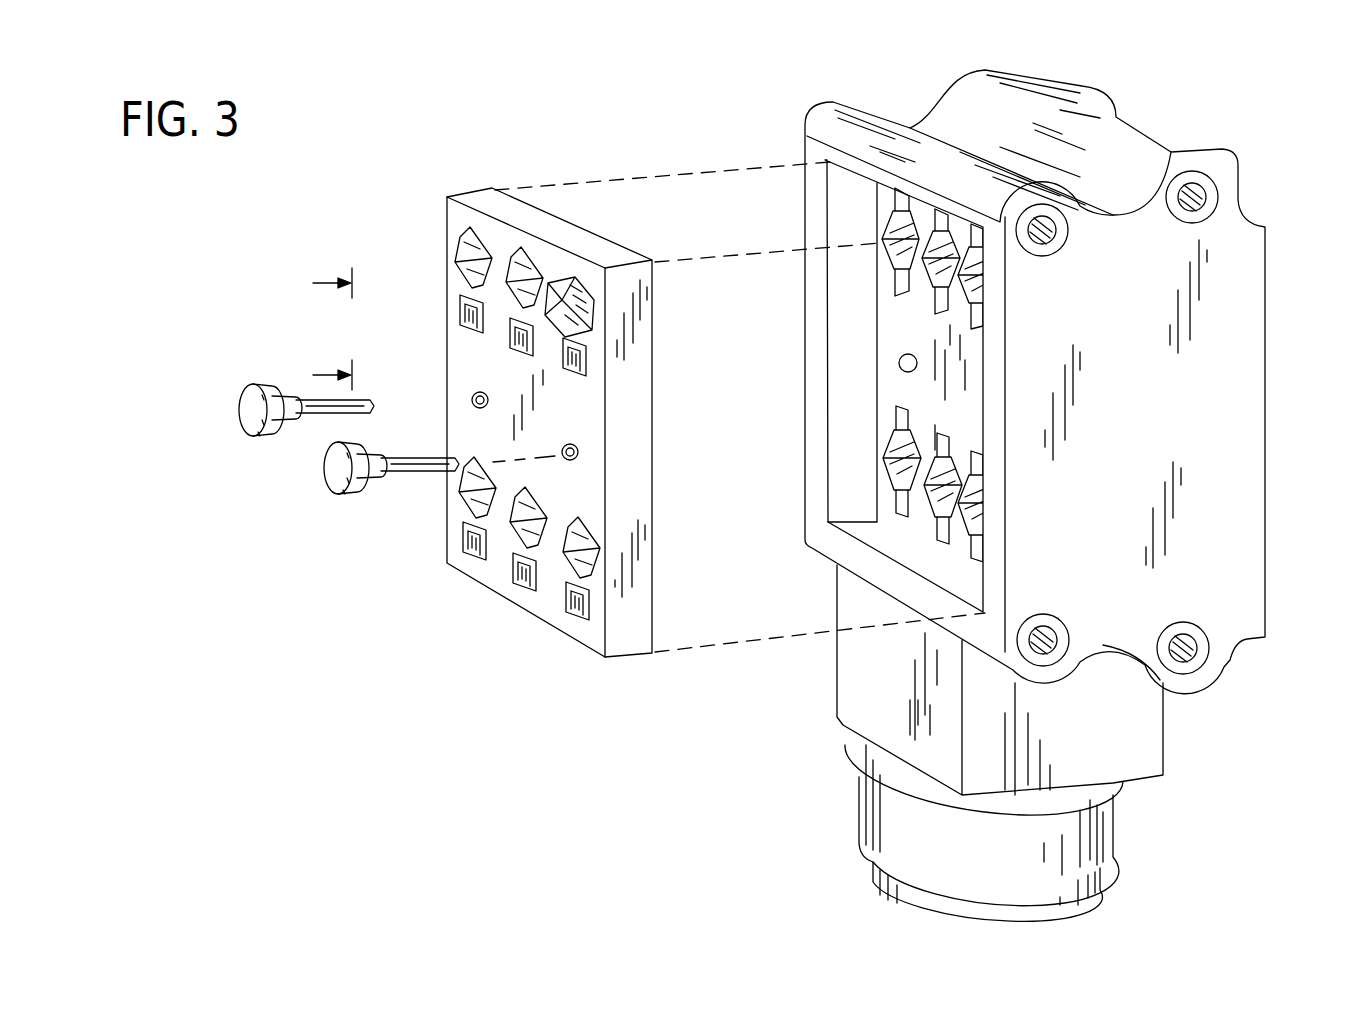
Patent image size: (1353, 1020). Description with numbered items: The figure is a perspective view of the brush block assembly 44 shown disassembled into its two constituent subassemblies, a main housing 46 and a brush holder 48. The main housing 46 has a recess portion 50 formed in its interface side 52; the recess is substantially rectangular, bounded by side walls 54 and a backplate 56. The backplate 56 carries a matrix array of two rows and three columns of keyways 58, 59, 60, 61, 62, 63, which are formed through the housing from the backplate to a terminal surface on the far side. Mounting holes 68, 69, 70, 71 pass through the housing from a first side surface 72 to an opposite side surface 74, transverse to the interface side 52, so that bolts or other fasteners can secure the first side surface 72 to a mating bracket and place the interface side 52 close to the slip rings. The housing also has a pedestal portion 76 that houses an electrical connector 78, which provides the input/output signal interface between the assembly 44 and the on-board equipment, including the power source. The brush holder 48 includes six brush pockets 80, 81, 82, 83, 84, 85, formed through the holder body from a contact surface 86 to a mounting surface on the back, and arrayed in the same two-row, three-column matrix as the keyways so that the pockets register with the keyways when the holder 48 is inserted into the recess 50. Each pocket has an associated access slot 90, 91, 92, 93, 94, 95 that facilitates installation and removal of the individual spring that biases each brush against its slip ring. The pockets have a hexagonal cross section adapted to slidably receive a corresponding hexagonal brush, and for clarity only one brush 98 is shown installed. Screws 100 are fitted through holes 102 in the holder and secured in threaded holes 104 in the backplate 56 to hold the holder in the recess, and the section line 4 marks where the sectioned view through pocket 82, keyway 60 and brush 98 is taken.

The section line 4— 4 is at (320, 329).
The brush block assembly 44 is at (1160, 82).
The main housing 46 is at (1010, 73).
The brush holder 48 is at (558, 216).
The recess portion 50 is at (852, 228).
The interface side 52 is at (905, 592).
The side walls 54 is at (865, 469).
The backplate 56 is at (885, 335).
The keyway 58 is at (898, 242).
The keyway 59 is at (935, 272).
The keyway 60 is at (968, 292).
The keyway 61 is at (892, 480).
The keyway 62 is at (927, 510).
The keyway 63 is at (985, 525).
The mounting hole 68 is at (1046, 224).
The mounting hole 69 is at (1196, 197).
The mounting hole 70 is at (1045, 640).
The mounting hole 71 is at (1185, 648).
The first side surface 72 is at (1222, 405).
The opposite side surface 74 is at (924, 121).
The pedestal portion 76 is at (893, 718).
The electrical connector 78 is at (918, 828).
The brush pocket 80 is at (468, 245).
The brush pocket 81 is at (520, 262).
The brush pocket 82 is at (568, 298).
The brush pocket 83 is at (462, 487).
The brush pocket 84 is at (522, 527).
The brush pocket 85 is at (582, 537).
The contact surface 86 is at (545, 605).
The access slot 90 is at (465, 315).
The access slot 91 is at (515, 342).
The access slot 92 is at (552, 318).
The access slot 93 is at (473, 548).
The access slot 94 is at (526, 572).
The access slot 95 is at (578, 615).
The brush 98 is at (575, 352).
The screws 100 is at (422, 470).
The holes 102 is at (478, 403).
The threaded holes 104 is at (906, 365).